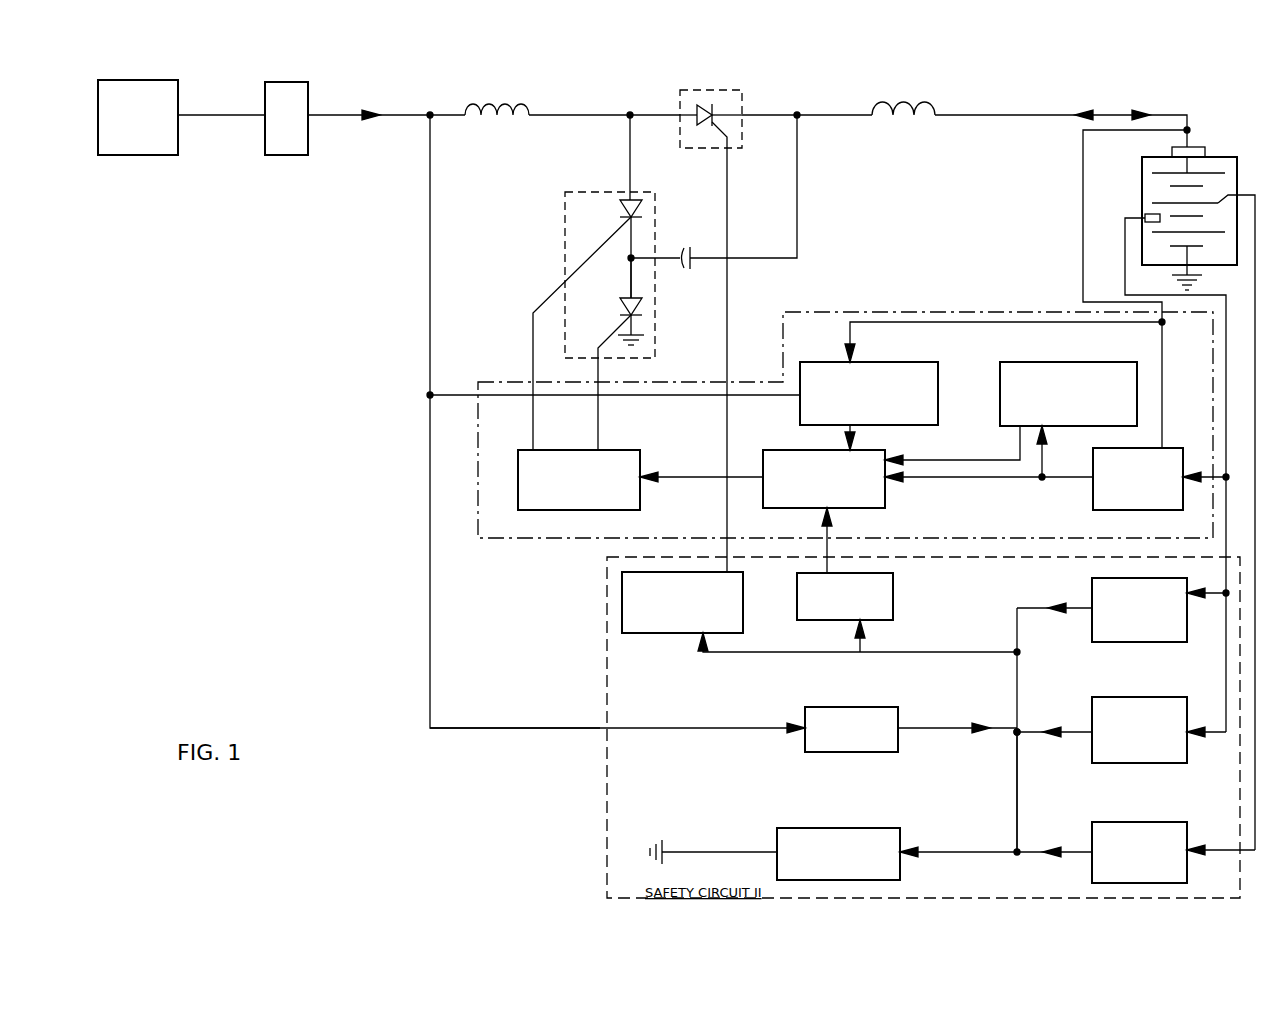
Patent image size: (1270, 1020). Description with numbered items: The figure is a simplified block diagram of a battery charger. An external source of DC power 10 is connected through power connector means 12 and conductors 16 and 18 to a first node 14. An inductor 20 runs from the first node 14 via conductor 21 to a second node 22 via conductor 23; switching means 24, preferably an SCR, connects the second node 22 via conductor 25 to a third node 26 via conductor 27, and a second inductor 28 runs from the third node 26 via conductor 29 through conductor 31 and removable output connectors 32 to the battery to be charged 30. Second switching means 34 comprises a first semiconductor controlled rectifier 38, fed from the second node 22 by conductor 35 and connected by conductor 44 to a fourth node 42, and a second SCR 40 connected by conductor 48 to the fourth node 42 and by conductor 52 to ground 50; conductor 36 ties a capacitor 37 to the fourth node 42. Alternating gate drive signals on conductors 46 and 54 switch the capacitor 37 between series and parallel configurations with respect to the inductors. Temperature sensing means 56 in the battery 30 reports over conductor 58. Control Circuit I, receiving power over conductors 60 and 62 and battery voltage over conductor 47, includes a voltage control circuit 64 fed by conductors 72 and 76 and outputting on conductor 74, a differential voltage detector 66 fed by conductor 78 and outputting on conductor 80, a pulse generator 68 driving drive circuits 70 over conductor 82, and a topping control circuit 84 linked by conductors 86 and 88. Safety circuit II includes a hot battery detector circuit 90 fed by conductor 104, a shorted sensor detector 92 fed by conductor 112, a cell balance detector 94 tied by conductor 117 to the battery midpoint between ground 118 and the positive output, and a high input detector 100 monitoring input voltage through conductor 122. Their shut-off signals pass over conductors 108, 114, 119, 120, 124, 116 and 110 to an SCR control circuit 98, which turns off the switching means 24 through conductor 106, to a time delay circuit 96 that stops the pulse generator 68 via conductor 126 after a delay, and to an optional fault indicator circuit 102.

The external source of DC power 10 is at (172, 80).
The power connector means 12 is at (305, 82).
The first node 14 is at (432, 113).
The conductor 16 is at (226, 113).
The conductor 18 is at (350, 100).
The inductor 20 is at (514, 104).
The conductor 21 is at (462, 113).
The second node 22 is at (632, 112).
The conductor 23 is at (600, 113).
The switching means 24 is at (720, 90).
The conductor 25 is at (672, 112).
The third node 26 is at (798, 112).
The conductor 27 is at (760, 112).
The second inductor 28 is at (928, 108).
The conductor 29 is at (840, 112).
The battery to be charged 30 is at (1232, 162).
The conductor 31 is at (1012, 113).
The removable output connectors 32 is at (1196, 152).
The second switching means 34 is at (565, 212).
The conductor 35 is at (630, 158).
The conductor 36 is at (660, 248).
The capacitor 37 is at (694, 254).
The first semiconductor controlled rectifier 38 is at (624, 208).
The second SCR 40 is at (644, 302).
The fourth node 42 is at (628, 284).
The conductor 44 is at (628, 258).
The conductor 46 is at (552, 302).
The conductor 47 is at (1083, 182).
The conductor 48 is at (640, 275).
The ground 50 is at (652, 340).
The conductor 52 is at (640, 326).
The conductor 54 is at (614, 330).
The temperature sensing means 56 is at (1145, 218).
The conductor 58 is at (1227, 318).
The conductor 60 is at (429, 319).
The conductor 62 is at (460, 385).
The voltage control circuit 64 is at (1138, 479).
The differential voltage detector 66 is at (869, 393).
The pulse generator 68 is at (824, 479).
The drive circuits 70 is at (579, 480).
The conductor 72 is at (1184, 470).
The conductor 74 is at (976, 480).
The conductor 76 is at (1163, 382).
The conductor 78 is at (975, 312).
The conductor 80 is at (848, 440).
The conductor 82 is at (702, 476).
The topping control circuit 84 is at (1068, 394).
The conductor 86 is at (1043, 474).
The conductor 88 is at (972, 460).
The hot battery detector circuit 90 is at (1139, 610).
The shorted sensor detector 92 is at (1139, 730).
The cell balance detector 94 is at (1173, 852).
The time delay circuit 96 is at (845, 596).
The SCR control circuit 98 is at (682, 602).
The high input detector 100 is at (851, 729).
The fault indicator circuit 102 is at (833, 854).
The conductor 104 is at (1214, 598).
The conductor 106 is at (729, 317).
The conductor 108 is at (1028, 608).
The conductor 110 is at (772, 654).
The conductor 112 is at (1227, 672).
The conductor 114 is at (1074, 732).
The conductor 116 is at (1018, 668).
The conductor 117 is at (1258, 388).
The ground 118 is at (1202, 286).
The conductor 119 is at (1026, 854).
The conductor 120 is at (1018, 798).
The conductor 122 is at (530, 730).
The conductor 124 is at (957, 712).
The conductor 126 is at (830, 548).